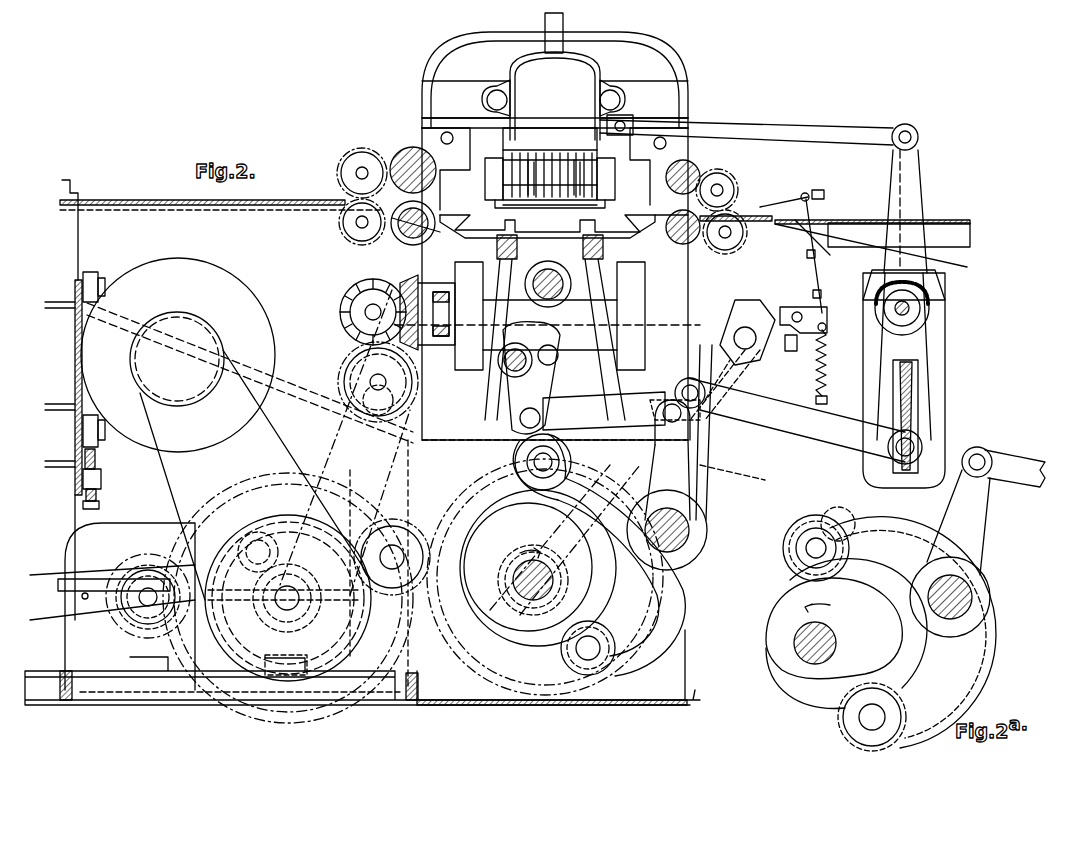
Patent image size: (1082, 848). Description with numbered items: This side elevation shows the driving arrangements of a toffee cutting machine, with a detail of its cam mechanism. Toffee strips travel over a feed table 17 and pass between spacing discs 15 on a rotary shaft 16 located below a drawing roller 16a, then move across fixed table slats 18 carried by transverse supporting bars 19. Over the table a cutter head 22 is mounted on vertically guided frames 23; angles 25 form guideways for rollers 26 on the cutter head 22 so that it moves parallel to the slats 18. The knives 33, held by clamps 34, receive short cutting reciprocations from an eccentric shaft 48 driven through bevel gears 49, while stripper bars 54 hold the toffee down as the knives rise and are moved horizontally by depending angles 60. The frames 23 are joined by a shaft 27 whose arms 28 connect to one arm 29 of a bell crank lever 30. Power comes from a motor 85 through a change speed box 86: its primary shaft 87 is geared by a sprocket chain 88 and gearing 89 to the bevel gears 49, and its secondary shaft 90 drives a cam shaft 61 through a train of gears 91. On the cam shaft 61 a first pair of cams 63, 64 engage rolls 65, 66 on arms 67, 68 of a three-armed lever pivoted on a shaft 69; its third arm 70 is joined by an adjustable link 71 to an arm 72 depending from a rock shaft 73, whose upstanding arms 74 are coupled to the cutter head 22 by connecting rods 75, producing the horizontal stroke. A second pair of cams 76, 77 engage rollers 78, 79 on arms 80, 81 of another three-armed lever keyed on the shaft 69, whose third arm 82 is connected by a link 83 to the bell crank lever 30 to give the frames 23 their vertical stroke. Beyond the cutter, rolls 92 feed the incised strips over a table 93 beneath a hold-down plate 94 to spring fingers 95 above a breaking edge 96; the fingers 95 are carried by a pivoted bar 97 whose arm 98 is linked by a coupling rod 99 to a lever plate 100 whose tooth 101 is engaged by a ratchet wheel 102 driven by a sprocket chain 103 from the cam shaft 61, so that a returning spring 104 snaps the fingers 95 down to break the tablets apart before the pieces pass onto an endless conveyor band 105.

In FIG. 2, the discs 15 is at (380, 243).
In FIG. 2, the rotary shaft 16 is at (426, 228).
In FIG. 2, the drawing roller 16a is at (398, 147).
In FIG. 2, the feed table 17 is at (215, 222).
In FIG. 2, the table slats or flat topped bars 18 is at (462, 205).
In FIG. 2, the transverse supporting bars 19 is at (497, 245).
In FIG. 2, the cross or cutter head 22 is at (585, 85).
In FIG. 2, the vertically guided frames 23 is at (630, 36).
In FIG. 2, the angles 25 is at (640, 97).
In FIG. 2, the rollers 26 is at (486, 98).
In FIG. 2, the shaft 27 is at (560, 280).
In FIG. 2, the link or arm 28 is at (570, 340).
In FIG. 2, the arm of bell crank lever 29 is at (540, 372).
In FIG. 2, the bell crank lever 30 is at (503, 395).
In FIG. 2, the knives 33 is at (578, 160).
In FIG. 2, the clamps 34 is at (528, 160).
In FIG. 2, the eccentric shaft 48 is at (585, 318).
In FIG. 2, the bevel gears 49 is at (340, 302).
In FIG. 2, the stripper plates or bars 54 is at (548, 175).
In FIG. 2, the depending strips or angles 60 is at (485, 175).
In FIG. 2, the cam shaft 61 is at (515, 588).
In FIG. 2A, the cam shaft 61 is at (793, 640).
In FIG. 2A, the cam 63 is at (812, 680).
In FIG. 2A, the cam 64 is at (778, 688).
In FIG. 2A, the roll 65 is at (845, 722).
In FIG. 2A, the roll 66 is at (790, 568).
In FIG. 2A, the arm of three-armed lever 67 is at (978, 680).
In FIG. 2A, the arm of three-armed lever 68 is at (838, 515).
In FIG. 2, the shaft 69 is at (675, 522).
In FIG. 2A, the shaft 69 is at (965, 598).
In FIG. 2, the third arm 70 is at (706, 452).
In FIG. 2A, the third arm 70 is at (990, 530).
In FIG. 2, the link 71 is at (832, 440).
In FIG. 2A, the link 71 is at (1003, 465).
In FIG. 2, the arm 72 is at (945, 385).
In FIG. 2, the rock shaft 73 is at (920, 323).
In FIG. 2, the upstanding arms 74 is at (915, 185).
In FIG. 2, the connecting rods 75 is at (745, 128).
In FIG. 2, the cam 76 is at (590, 600).
In FIG. 2, the cam 77 is at (560, 590).
In FIG. 2, the roller 78 is at (605, 665).
In FIG. 2, the roller 79 is at (515, 460).
In FIG. 2, the arm of three-armed lever 80 is at (655, 642).
In FIG. 2, the arm of three-armed lever 81 is at (574, 545).
In FIG. 2, the third arm 82 is at (690, 470).
In FIG. 2, the link 83 is at (615, 405).
In FIG. 2, the motor 85 is at (220, 290).
In FIG. 2, the change speed box 86 is at (125, 525).
In FIG. 2, the primary shaft 87 is at (275, 600).
In FIG. 2, the sprocket chain 88 is at (250, 445).
In FIG. 2, the gearing 89 is at (340, 328).
In FIG. 2, the secondary shaft 90 is at (148, 590).
In FIG. 2, the train of gears 91 is at (235, 512).
In FIG. 2, the rolls 92 is at (683, 160).
In FIG. 2, the table 93 is at (765, 225).
In FIG. 2, the hold-down plate 94 is at (730, 205).
In FIG. 2, the spring fingers 95 is at (785, 202).
In FIG. 2, the breaking edge 96 is at (801, 237).
In FIG. 2, the pivotally mounted bar 97 is at (824, 192).
In FIG. 2, the arm 98 is at (808, 193).
In FIG. 2, the adjustable coupling rod 99 is at (812, 262).
In FIG. 2, the pivoted lever plate 100 is at (808, 312).
In FIG. 2, the tooth 101 is at (790, 351).
In FIG. 2, the ratchet wheel 102 is at (767, 397).
In FIG. 2, the sprocket chain 103 is at (750, 428).
In FIG. 2, the returning spring 104 is at (827, 365).
In FIG. 2, the endless conveyor band 105 is at (830, 218).